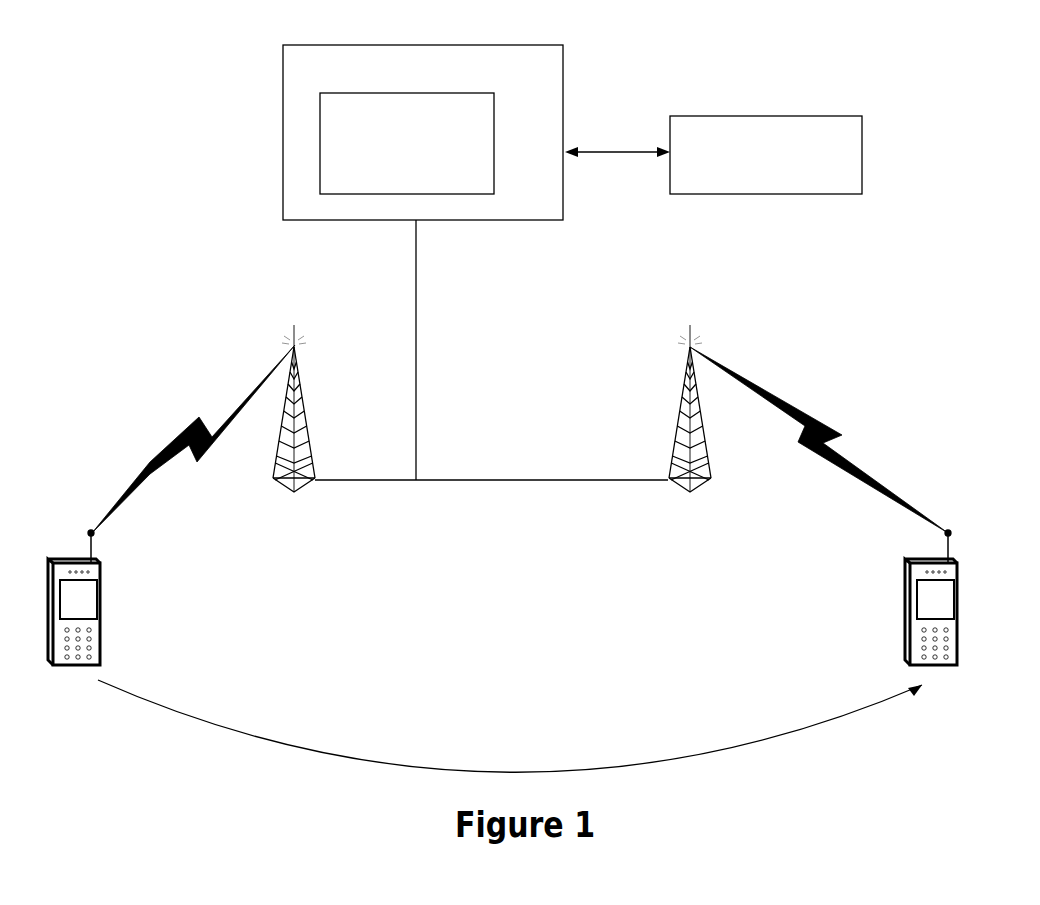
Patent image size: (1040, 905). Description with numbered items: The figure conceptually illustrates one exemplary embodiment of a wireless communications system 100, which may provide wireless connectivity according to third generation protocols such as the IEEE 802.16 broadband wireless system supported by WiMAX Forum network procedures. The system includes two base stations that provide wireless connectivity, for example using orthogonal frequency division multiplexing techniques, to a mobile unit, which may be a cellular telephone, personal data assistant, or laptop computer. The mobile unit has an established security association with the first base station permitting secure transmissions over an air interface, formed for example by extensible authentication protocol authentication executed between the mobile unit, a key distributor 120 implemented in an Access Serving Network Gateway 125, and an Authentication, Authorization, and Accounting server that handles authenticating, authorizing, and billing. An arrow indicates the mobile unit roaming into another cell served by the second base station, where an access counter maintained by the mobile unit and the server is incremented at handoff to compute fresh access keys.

The wireless communications system 100 is at (928, 97).
The key distributor 120 is at (417, 181).
The Access Serving Network Gateway (ASN-GW) 125 is at (548, 84).